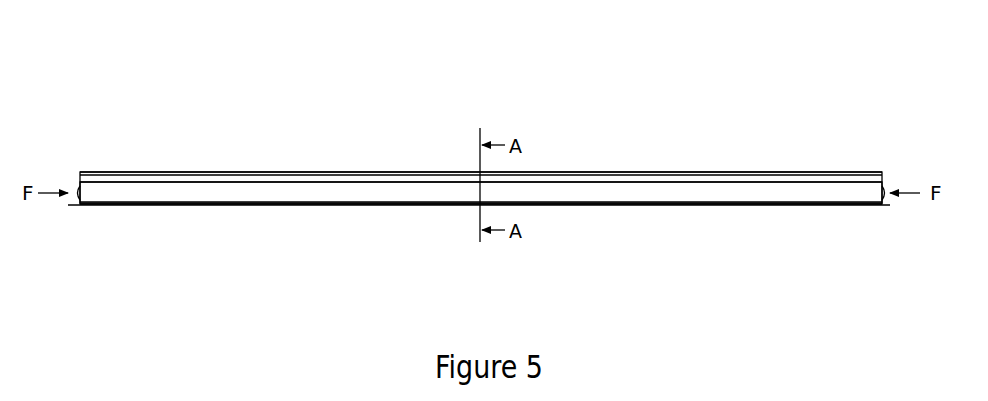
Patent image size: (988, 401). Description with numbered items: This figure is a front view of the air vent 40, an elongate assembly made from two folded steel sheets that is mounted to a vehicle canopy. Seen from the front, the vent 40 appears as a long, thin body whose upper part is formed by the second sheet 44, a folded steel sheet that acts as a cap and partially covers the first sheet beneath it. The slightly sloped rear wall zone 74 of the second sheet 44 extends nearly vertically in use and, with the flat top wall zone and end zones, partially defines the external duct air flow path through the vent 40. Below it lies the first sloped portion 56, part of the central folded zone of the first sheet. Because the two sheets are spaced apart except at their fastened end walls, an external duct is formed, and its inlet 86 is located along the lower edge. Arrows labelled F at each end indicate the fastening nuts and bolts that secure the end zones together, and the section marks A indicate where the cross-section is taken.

The air vent 40 is at (183, 76).
The second sheet 44 is at (395, 172).
The rear wall zone 74 is at (670, 182).
The first sloped portion 56 is at (672, 196).
The inlet 86 is at (378, 204).